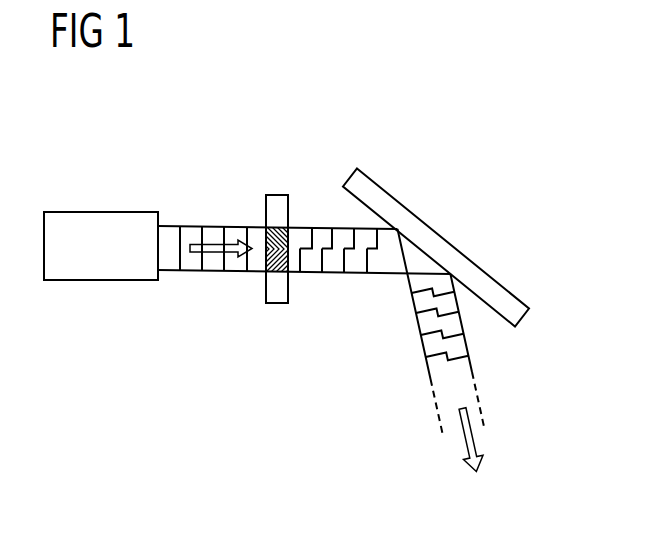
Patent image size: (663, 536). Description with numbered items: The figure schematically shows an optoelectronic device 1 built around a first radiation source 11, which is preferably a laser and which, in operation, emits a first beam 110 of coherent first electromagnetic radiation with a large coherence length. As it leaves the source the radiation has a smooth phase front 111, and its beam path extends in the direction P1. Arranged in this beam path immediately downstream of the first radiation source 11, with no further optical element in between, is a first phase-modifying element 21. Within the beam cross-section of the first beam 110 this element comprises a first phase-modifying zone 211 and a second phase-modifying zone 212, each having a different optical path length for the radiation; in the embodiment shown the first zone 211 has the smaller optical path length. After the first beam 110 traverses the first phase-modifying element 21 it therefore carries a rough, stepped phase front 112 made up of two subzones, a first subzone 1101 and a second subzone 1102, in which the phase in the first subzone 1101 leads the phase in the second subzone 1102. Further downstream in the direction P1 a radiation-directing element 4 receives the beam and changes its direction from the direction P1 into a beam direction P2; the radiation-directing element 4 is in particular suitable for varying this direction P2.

The optoelectronic device 1 is at (147, 156).
The first radiation source 11 is at (99, 222).
The first beam 110 is at (190, 232).
The smooth phase front 111 is at (175, 268).
The phase front 112 is at (307, 274).
The first subzone 1101 is at (335, 228).
The second subzone 1102 is at (332, 272).
The direction P1 is at (208, 248).
The first phase-modifying element 21 is at (276, 299).
The first phase-modifying zone 211 is at (268, 222).
The second phase-modifying zone 212 is at (267, 290).
The radiation-directing element 4 is at (437, 245).
The direction P2 is at (478, 442).